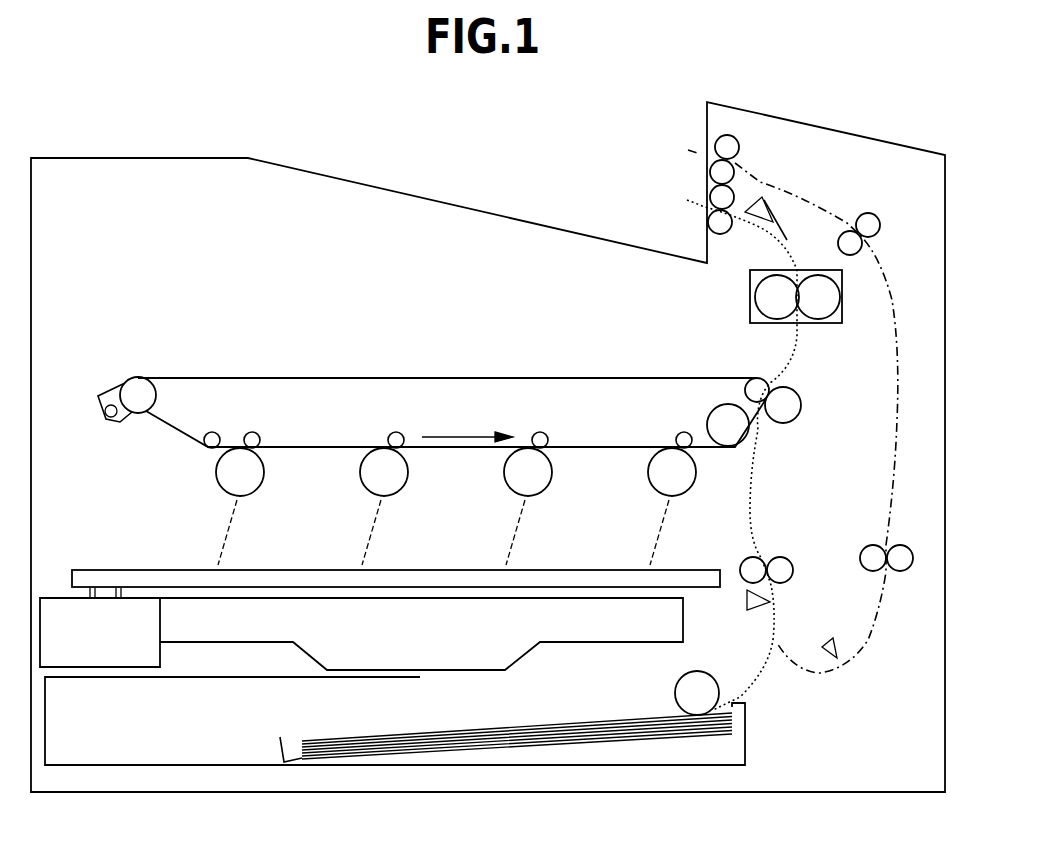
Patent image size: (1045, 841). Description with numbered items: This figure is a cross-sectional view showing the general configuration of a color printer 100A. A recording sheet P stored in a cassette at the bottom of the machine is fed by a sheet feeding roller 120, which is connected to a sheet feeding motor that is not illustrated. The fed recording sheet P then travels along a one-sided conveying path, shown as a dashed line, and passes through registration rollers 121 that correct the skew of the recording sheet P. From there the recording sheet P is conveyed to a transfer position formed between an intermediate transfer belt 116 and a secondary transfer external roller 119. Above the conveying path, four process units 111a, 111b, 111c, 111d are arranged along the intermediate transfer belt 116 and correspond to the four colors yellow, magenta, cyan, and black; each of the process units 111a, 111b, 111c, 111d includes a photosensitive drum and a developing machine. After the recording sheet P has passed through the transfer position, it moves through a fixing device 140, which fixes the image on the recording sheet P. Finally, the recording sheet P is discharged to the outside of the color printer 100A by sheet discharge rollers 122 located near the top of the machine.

The color printer 100A is at (107, 157).
The intermediate transfer belt 116 is at (508, 377).
The process unit 111a is at (232, 488).
The process unit 111b is at (376, 488).
The process unit 111c is at (520, 488).
The process unit 111d is at (664, 488).
The secondary transfer external roller 119 is at (801, 405).
The sheet discharge rollers 122 is at (718, 222).
The fixing device 140 is at (750, 301).
The registration rollers 121 is at (748, 578).
The sheet feeding roller 120 is at (675, 693).
The recording sheet P is at (540, 725).